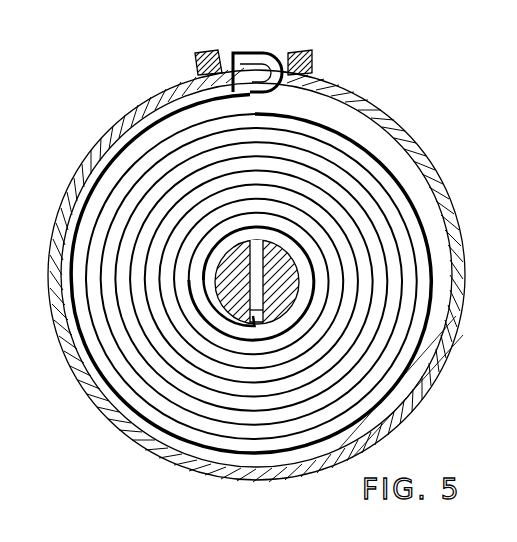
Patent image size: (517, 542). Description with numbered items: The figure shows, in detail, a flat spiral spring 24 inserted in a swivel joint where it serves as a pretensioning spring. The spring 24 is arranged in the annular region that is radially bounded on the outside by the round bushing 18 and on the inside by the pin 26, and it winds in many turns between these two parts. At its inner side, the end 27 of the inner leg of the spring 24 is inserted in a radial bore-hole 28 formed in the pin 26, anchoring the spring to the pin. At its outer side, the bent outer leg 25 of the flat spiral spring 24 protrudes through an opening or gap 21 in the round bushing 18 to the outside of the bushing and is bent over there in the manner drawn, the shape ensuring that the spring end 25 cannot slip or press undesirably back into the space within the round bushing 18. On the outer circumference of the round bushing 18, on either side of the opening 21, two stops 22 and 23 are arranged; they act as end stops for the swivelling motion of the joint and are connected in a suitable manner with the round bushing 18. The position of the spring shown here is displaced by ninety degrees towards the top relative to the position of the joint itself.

The round bushing 18 is at (77, 180).
The opening or gap 21 is at (272, 87).
The stop 22 is at (196, 64).
The stop 23 is at (313, 70).
The flat spiral spring 24 is at (403, 355).
The bent outer leg 25 is at (265, 61).
The pin 26 is at (243, 238).
The end of the inner leg 27 is at (236, 302).
The radial bore-hole 28 is at (250, 324).